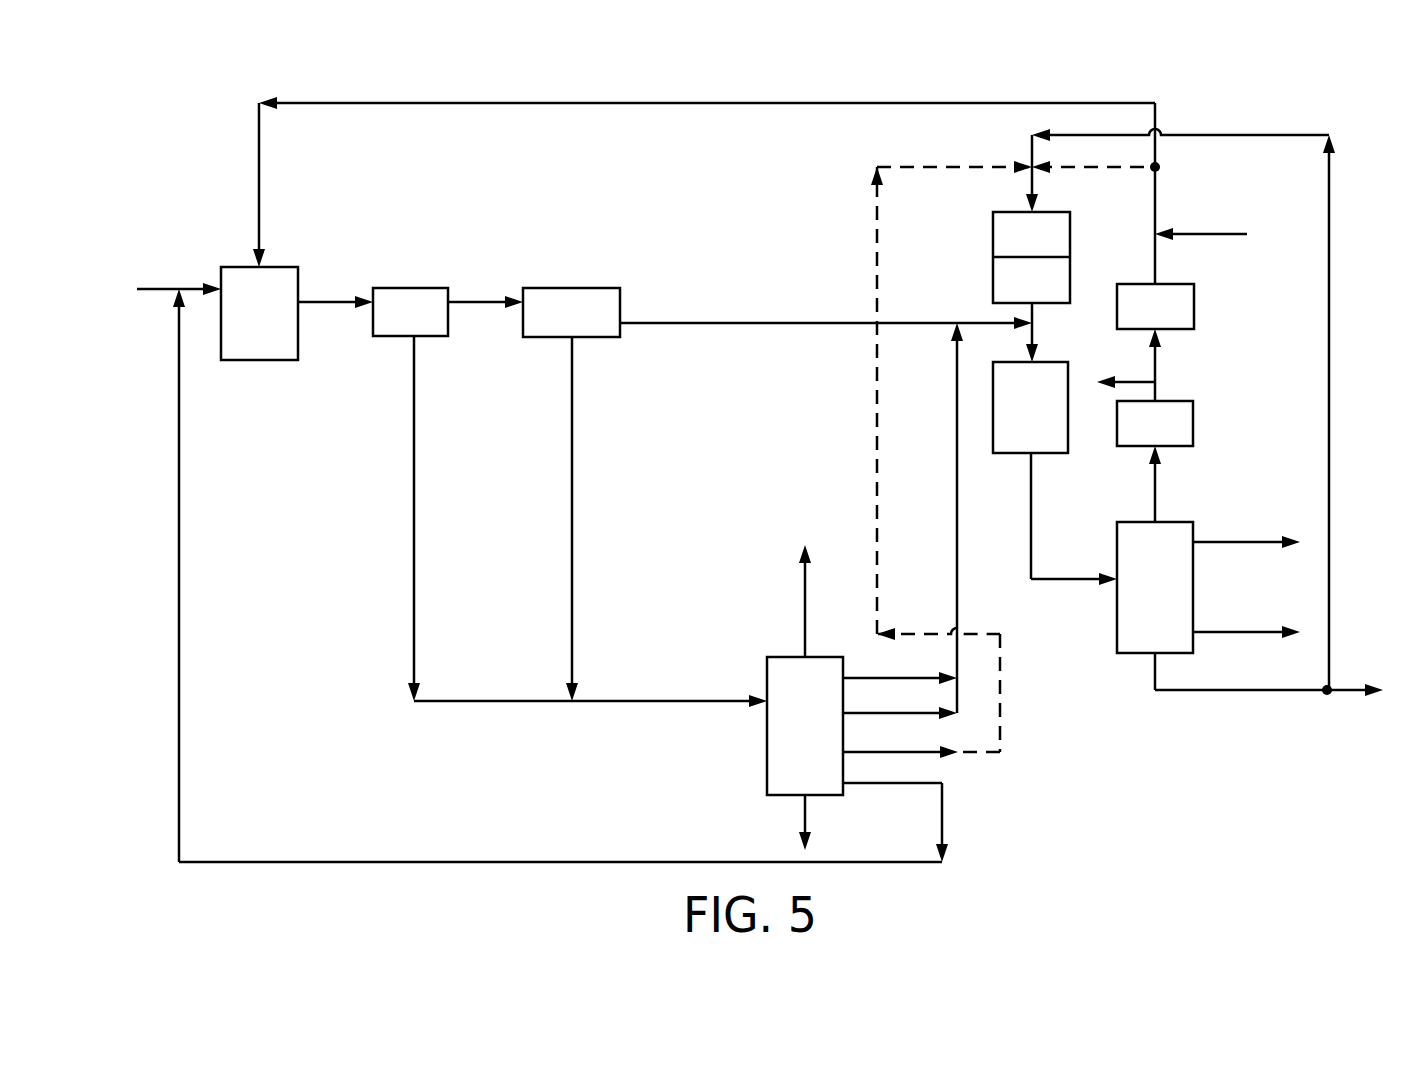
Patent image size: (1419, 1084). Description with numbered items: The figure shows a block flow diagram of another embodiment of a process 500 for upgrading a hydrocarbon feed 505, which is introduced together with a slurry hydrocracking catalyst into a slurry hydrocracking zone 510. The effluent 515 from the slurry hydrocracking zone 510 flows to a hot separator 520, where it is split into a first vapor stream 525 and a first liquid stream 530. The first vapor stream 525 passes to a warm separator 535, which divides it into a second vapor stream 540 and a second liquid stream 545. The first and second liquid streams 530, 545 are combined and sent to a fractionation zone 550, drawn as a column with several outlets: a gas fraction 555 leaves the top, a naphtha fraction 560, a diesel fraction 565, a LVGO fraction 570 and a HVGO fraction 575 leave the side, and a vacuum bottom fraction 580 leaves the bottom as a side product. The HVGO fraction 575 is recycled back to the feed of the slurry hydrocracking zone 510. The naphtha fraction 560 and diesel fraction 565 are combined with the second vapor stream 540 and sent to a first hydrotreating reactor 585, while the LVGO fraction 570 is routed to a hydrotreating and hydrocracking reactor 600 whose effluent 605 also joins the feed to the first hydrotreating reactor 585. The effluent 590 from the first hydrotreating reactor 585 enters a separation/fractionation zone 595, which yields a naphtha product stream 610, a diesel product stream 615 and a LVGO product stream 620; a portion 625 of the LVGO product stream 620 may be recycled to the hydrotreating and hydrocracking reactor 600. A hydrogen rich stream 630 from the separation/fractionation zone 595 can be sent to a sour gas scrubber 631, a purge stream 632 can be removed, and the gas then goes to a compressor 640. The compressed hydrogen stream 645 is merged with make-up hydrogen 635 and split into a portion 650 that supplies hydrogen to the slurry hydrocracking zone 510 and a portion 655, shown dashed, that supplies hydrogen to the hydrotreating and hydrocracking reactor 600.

The process 500 is at (186, 105).
The hydrocarbon feed 505 is at (165, 289).
The slurry hydrocracking zone 510 is at (258, 361).
The effluent 515 is at (336, 298).
The hot separator 520 is at (412, 288).
The first vapor stream 525 is at (485, 298).
The first liquid stream 530 is at (413, 428).
The warm separator 535 is at (572, 288).
The second vapor stream 540 is at (722, 322).
The second liquid stream 545 is at (571, 428).
The fractionation zone 550 is at (778, 656).
The gas fraction 555 is at (804, 586).
The naphtha fraction 560 is at (918, 676).
The diesel fraction 565 is at (913, 713).
The LVGO fraction 570 is at (913, 752).
The HVGO fraction 575 is at (913, 783).
The vacuum bottom fraction 580 is at (804, 819).
The first hydrotreating reactor 585 is at (1042, 361).
The effluent 590 is at (1030, 467).
The separation/fractionation zone 595 is at (1129, 519).
The hydrotreating and hydrocracking reactor 600 is at (992, 229).
The effluent 605 is at (1020, 313).
The naphtha product stream 610 is at (1268, 541).
The diesel product stream 615 is at (1242, 631).
The LVGO product stream 620 is at (1244, 691).
The portion of the LVGO product stream 625 is at (1331, 407).
The hydrogen rich stream 630 is at (1157, 483).
The sour gas scrubber 631 is at (1195, 421).
The purge stream 632 is at (1134, 380).
The make-up hydrogen 635 is at (1228, 234).
The compressor 640 is at (1182, 284).
The compressed hydrogen stream 645 is at (1158, 196).
The portion of compressed hydrogen stream 650 is at (798, 101).
The portion of compressed hydrogen stream 655 is at (1112, 168).